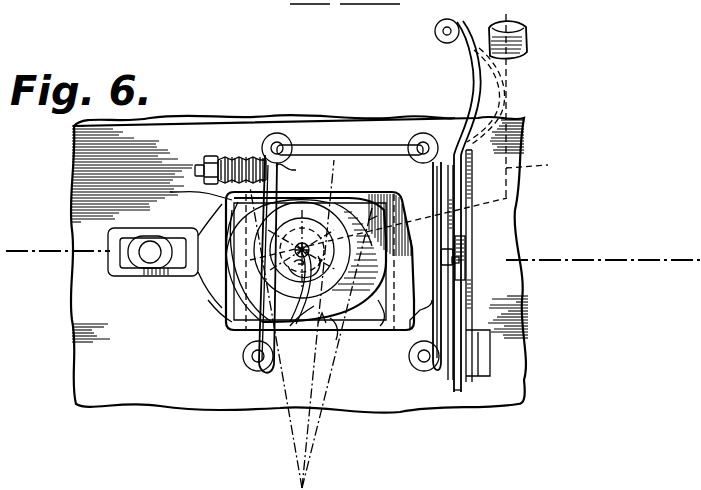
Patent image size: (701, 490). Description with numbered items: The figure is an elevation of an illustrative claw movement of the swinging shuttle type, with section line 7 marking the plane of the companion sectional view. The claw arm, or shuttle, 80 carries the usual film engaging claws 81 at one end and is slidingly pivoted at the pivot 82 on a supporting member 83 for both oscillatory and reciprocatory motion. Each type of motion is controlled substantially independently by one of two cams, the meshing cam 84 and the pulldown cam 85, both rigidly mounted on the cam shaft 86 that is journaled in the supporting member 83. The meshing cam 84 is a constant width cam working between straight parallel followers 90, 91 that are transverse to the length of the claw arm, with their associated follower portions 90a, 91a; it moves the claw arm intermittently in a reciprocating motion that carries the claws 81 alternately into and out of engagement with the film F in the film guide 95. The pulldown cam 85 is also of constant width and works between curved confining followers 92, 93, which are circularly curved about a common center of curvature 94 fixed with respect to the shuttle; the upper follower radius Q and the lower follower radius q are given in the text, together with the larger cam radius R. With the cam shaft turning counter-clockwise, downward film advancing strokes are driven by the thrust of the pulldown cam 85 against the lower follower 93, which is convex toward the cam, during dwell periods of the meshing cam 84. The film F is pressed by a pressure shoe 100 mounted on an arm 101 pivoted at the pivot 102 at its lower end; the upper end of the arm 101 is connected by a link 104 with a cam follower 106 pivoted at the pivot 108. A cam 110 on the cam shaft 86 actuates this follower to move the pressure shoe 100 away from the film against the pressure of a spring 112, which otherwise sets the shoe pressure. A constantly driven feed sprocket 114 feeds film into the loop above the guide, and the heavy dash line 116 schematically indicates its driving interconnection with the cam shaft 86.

The section line 7- 7 is at (16, 255).
The claw arm 80 is at (373, 196).
The film engaging claws 81 is at (459, 261).
The pivot 82 is at (178, 242).
The supporting member 83 is at (516, 200).
The meshing cam 84 is at (272, 244).
The pulldown cam 85 is at (340, 280).
The cam shaft 86 is at (308, 274).
The straight follower 90 is at (280, 196).
The follower portion 90a is at (230, 302).
The straight follower 91 is at (320, 201).
The follower portion 91a is at (380, 328).
The upper curved follower 92 is at (348, 208).
The lower curved follower 93 is at (334, 314).
The center of curvature 94 is at (312, 489).
The film guide 95 is at (472, 250).
The pressure shoe 100 is at (468, 168).
The arm 101 is at (417, 319).
The pivot 102 is at (427, 371).
The link 104 is at (378, 146).
The cam follower 106 is at (282, 174).
The pivot 108 is at (244, 365).
The cam 110 is at (316, 318).
The spring 112 is at (228, 157).
The feed sprocket 114 is at (528, 46).
The driving interconnection 116 is at (412, 137).
The film F is at (472, 90).
The larger cam radius R is at (238, 263).
The lower follower radius q is at (308, 428).
The upper follower radius Q is at (322, 422).